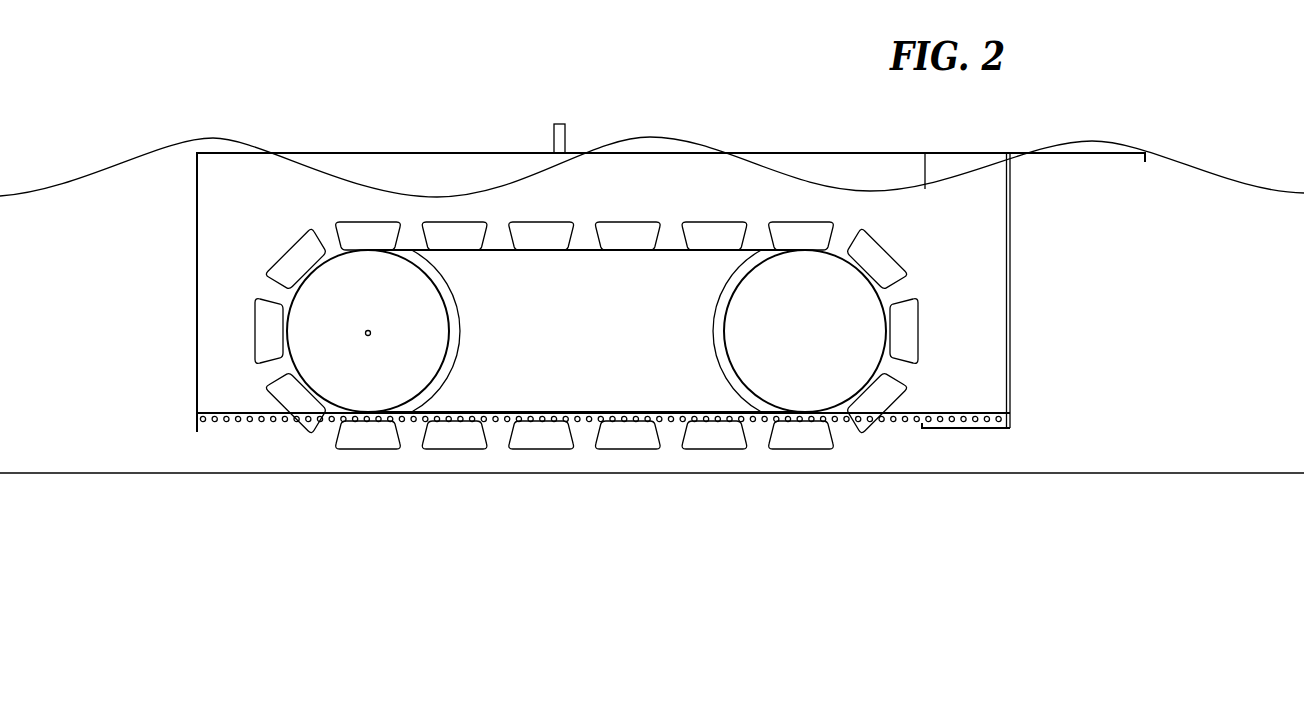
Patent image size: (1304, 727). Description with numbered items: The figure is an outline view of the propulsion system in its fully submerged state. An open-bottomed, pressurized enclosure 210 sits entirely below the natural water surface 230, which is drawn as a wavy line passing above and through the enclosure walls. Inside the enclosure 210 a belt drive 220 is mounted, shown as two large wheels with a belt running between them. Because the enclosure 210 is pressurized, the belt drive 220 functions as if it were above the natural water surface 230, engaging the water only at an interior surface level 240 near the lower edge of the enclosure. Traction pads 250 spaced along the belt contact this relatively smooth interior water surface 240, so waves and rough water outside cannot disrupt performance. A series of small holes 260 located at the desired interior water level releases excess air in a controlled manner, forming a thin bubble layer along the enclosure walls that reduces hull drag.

The enclosure 210 is at (442, 148).
The belt drive 220 is at (568, 386).
The natural water surface 230 is at (155, 146).
The water surface level 240 is at (249, 440).
The traction pads 250 is at (644, 449).
The small holes 260 is at (903, 445).